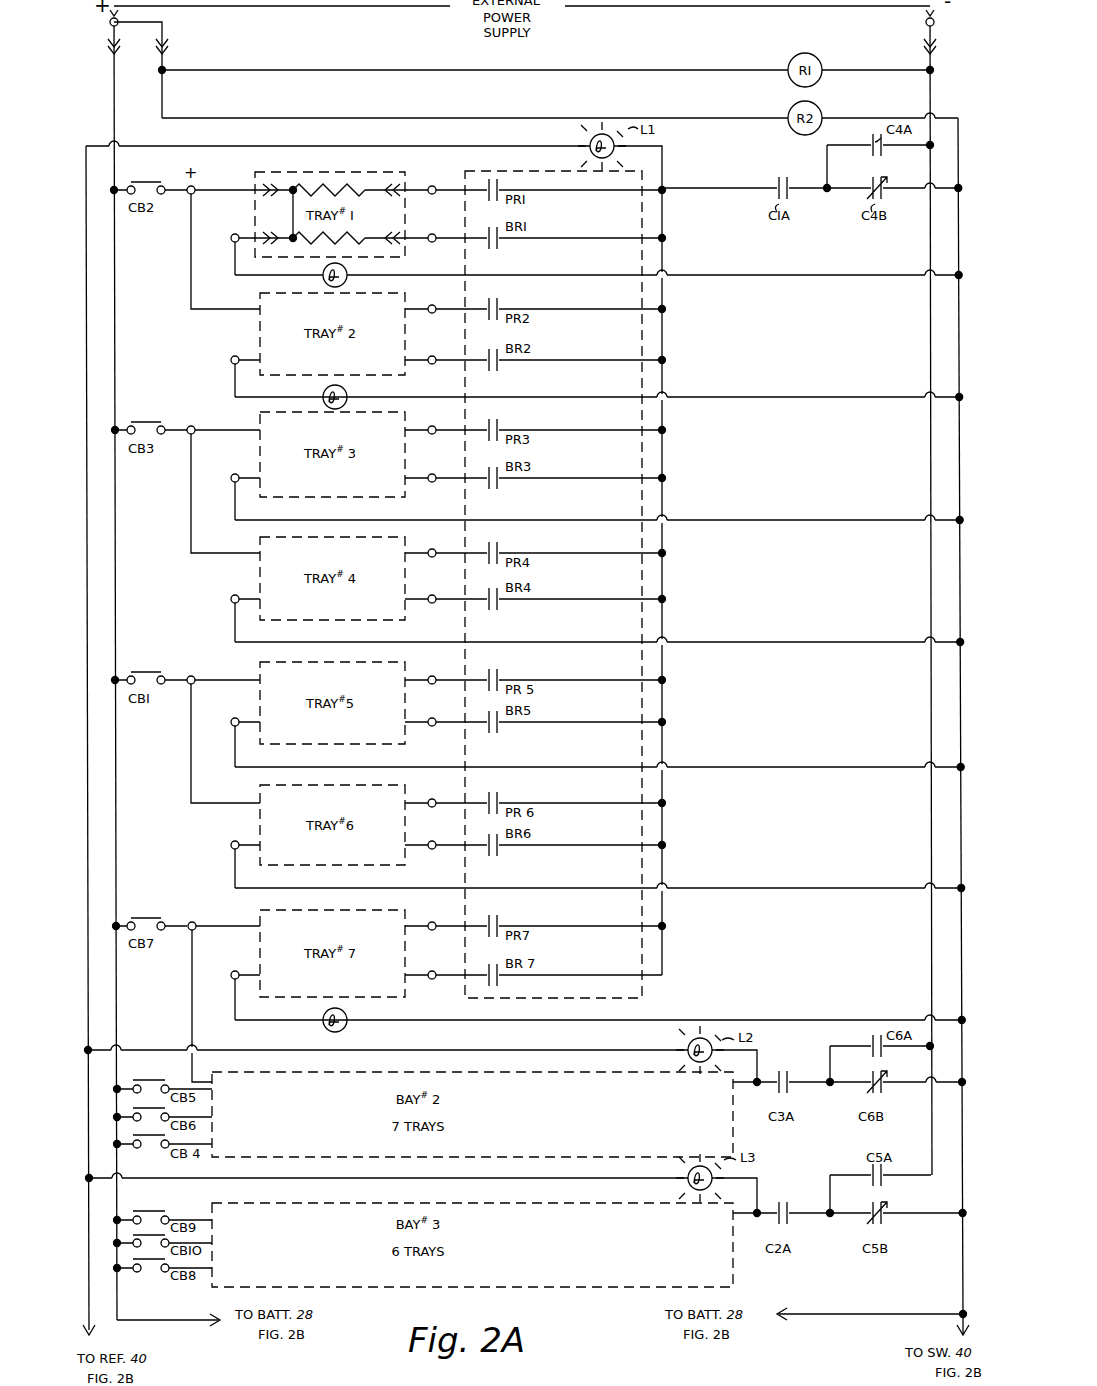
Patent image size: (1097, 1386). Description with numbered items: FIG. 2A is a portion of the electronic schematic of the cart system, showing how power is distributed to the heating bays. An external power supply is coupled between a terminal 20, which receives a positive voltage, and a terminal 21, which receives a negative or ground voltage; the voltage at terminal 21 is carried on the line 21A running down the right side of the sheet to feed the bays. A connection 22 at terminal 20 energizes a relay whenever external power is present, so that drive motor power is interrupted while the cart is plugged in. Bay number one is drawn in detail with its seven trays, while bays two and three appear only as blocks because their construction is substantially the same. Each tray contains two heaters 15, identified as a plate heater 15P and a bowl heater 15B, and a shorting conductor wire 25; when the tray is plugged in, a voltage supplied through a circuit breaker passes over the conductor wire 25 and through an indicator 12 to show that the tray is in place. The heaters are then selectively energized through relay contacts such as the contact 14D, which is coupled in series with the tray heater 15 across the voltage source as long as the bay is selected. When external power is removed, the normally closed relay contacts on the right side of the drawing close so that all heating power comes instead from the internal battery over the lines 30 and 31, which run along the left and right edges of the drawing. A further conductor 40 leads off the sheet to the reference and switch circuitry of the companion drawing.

The terminal 20 is at (110, 22).
The connection 22 is at (158, 19).
The terminal 21 is at (934, 24).
The line 21A is at (927, 448).
The line 30 is at (116, 830).
The line 31 is at (964, 905).
The reference conductor 40 is at (89, 1221).
The tray heater 15 is at (298, 172).
The plate heater 15P is at (335, 186).
The bowl heater 15B is at (356, 248).
The shorting conductor wire 25 is at (289, 217).
The second contact 14D is at (486, 196).
The indicator 12 is at (323, 274).